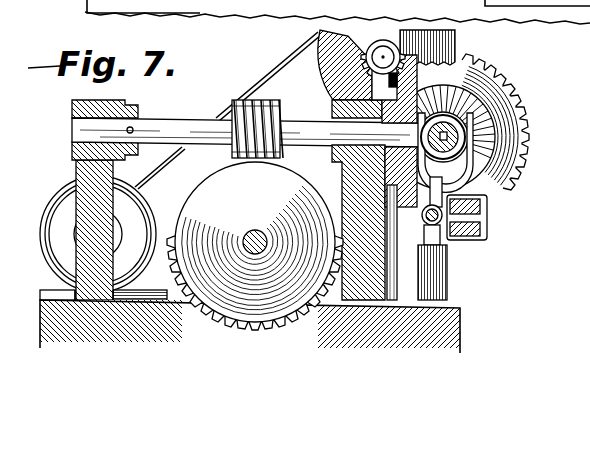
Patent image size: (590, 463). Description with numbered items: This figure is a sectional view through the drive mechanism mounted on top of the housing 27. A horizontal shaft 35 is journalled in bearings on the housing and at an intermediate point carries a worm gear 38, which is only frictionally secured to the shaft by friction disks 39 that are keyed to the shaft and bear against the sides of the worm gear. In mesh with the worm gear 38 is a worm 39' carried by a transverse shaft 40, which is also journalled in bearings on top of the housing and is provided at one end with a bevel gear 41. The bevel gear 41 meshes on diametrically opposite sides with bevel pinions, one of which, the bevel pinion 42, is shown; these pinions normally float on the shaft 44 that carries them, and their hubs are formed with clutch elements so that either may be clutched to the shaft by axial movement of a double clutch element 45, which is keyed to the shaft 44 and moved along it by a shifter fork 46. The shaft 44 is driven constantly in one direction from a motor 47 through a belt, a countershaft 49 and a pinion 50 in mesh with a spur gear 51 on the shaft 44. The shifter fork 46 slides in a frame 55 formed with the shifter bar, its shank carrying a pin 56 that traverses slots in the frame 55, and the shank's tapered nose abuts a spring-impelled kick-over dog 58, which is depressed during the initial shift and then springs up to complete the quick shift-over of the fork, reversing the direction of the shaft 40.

The housing 27 is at (462, 333).
The horizontal shaft 35 is at (251, 234).
The worm gear 38 is at (270, 330).
The friction disks 39 is at (255, 260).
The worm 39' is at (249, 113).
The transverse shaft 40 is at (173, 127).
The bevel gear 41 is at (372, 84).
The bevel pinion 42 is at (500, 135).
The shaft 44 is at (508, 150).
The double clutch element 45 is at (488, 182).
The shifter fork 46 is at (500, 126).
The motor 47 is at (58, 201).
The countershaft 49 is at (320, 31).
The pinion 50 is at (318, 38).
The spur gear 51 is at (478, 70).
The frame 55 is at (486, 222).
The pin 56 is at (452, 238).
The kick-over dog 58 is at (440, 255).